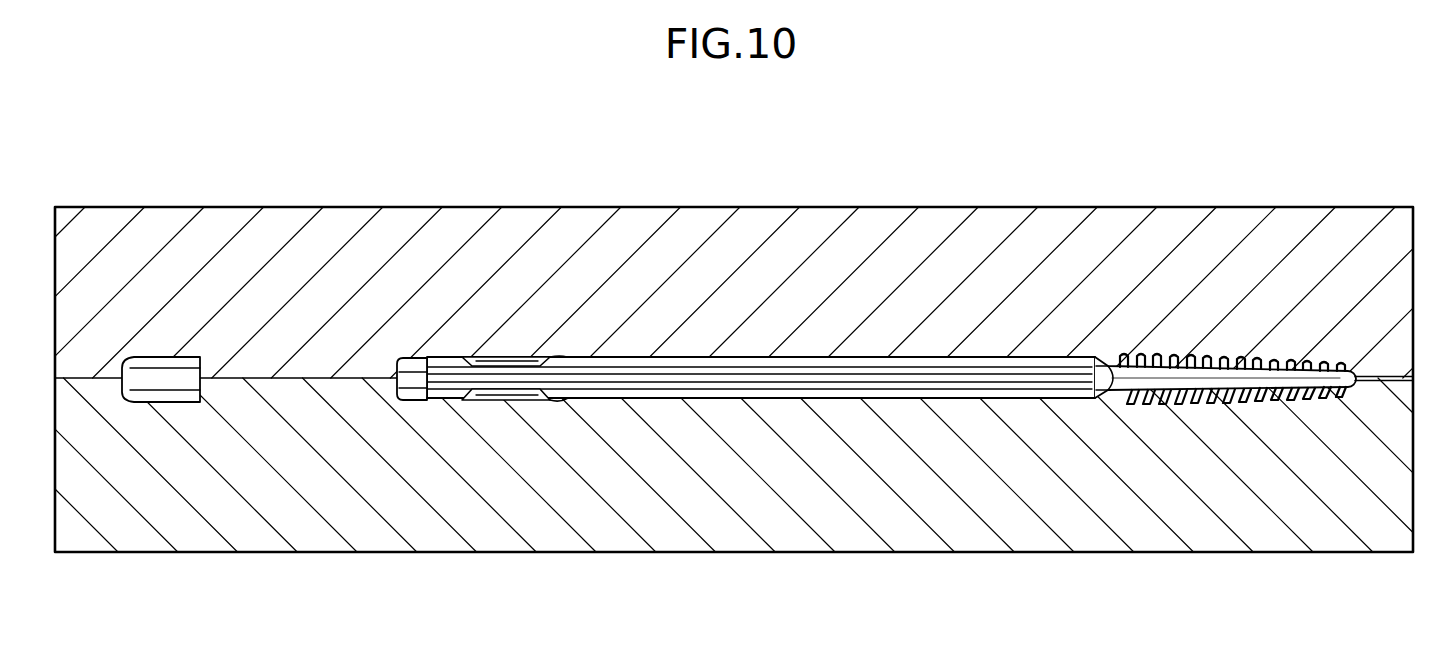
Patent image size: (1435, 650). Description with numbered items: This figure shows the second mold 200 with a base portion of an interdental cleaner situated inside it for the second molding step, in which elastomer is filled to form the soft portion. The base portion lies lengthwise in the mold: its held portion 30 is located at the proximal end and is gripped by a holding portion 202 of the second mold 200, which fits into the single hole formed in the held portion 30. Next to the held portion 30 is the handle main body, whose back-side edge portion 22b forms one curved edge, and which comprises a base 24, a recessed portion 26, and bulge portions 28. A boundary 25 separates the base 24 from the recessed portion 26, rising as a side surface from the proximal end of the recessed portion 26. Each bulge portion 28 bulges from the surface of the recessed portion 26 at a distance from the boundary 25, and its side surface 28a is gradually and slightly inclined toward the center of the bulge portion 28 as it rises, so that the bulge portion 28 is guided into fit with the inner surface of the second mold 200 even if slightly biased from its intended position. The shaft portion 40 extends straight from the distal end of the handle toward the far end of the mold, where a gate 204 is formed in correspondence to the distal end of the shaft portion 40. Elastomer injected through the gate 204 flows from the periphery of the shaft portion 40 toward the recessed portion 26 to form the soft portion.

The second mold 200 is at (288, 227).
The holding portion 202 is at (274, 384).
The gate 204 is at (1385, 372).
The held portion 30 is at (164, 357).
The base 24 is at (412, 358).
The boundary 25 is at (449, 398).
The recessed portion 26 is at (810, 365).
The bulge portion 28 is at (503, 357).
The side surface 28a is at (567, 357).
The back-side edge portion 22b is at (940, 375).
The shaft portion 40 is at (1125, 376).